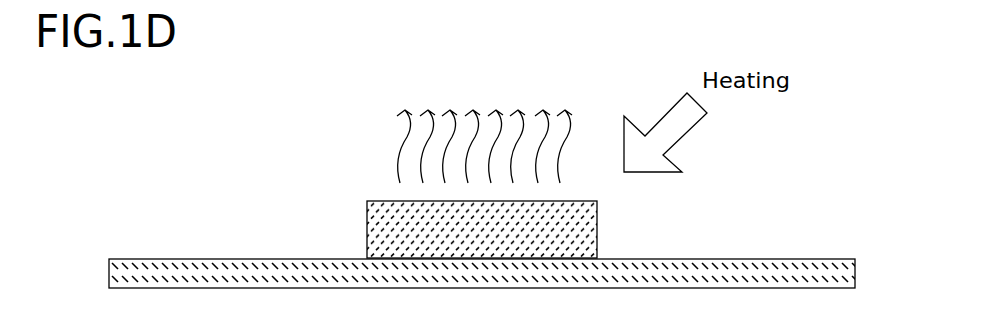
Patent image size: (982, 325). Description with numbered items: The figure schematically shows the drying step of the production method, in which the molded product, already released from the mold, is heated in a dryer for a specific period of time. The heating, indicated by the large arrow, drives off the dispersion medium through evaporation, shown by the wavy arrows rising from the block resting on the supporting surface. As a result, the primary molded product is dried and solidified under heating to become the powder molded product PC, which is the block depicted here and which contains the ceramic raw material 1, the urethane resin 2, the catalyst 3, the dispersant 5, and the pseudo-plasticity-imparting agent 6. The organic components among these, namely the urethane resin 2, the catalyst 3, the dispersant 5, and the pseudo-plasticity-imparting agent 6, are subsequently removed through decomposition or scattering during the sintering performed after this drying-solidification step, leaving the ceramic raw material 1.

The ceramic raw material 1 is at (417, 203).
The urethane resin 2 is at (417, 203).
The catalyst 3 is at (417, 203).
The dispersant 5 is at (417, 203).
The pseudo-plasticity-imparting agent 6 is at (367, 209).